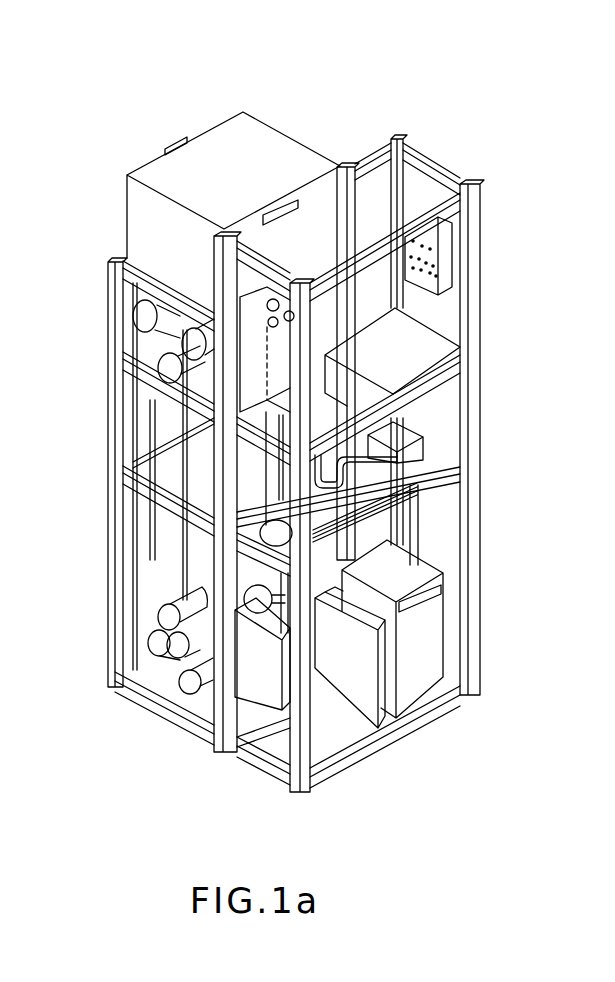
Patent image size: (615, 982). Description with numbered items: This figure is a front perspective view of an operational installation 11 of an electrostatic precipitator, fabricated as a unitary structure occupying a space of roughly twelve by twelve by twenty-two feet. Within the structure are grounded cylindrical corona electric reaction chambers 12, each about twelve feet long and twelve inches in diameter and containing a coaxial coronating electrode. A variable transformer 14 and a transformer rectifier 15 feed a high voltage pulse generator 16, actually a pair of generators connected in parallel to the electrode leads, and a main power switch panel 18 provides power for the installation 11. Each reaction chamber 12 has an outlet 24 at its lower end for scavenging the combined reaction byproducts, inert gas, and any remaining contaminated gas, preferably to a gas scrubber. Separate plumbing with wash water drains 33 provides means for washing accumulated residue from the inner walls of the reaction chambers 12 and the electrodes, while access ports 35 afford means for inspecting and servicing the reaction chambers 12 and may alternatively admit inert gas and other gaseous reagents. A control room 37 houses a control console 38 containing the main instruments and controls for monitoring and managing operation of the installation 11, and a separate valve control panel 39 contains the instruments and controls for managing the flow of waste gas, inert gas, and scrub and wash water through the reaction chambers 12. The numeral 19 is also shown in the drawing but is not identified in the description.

The operational installation 11 is at (497, 258).
The corona electric reaction chambers 12 is at (190, 340).
The variable transformer 14 is at (423, 667).
The transformer rectifier 15 is at (343, 700).
The high voltage pulse generator 16 is at (228, 178).
The main power switch panel 18 is at (255, 663).
The container 19 is at (168, 368).
The outlet 24 is at (169, 617).
The wash water drains 33 is at (115, 680).
The access ports 35 is at (153, 642).
The control room 37 is at (393, 340).
The control console 38 is at (430, 365).
The valve control panel 39 is at (433, 247).